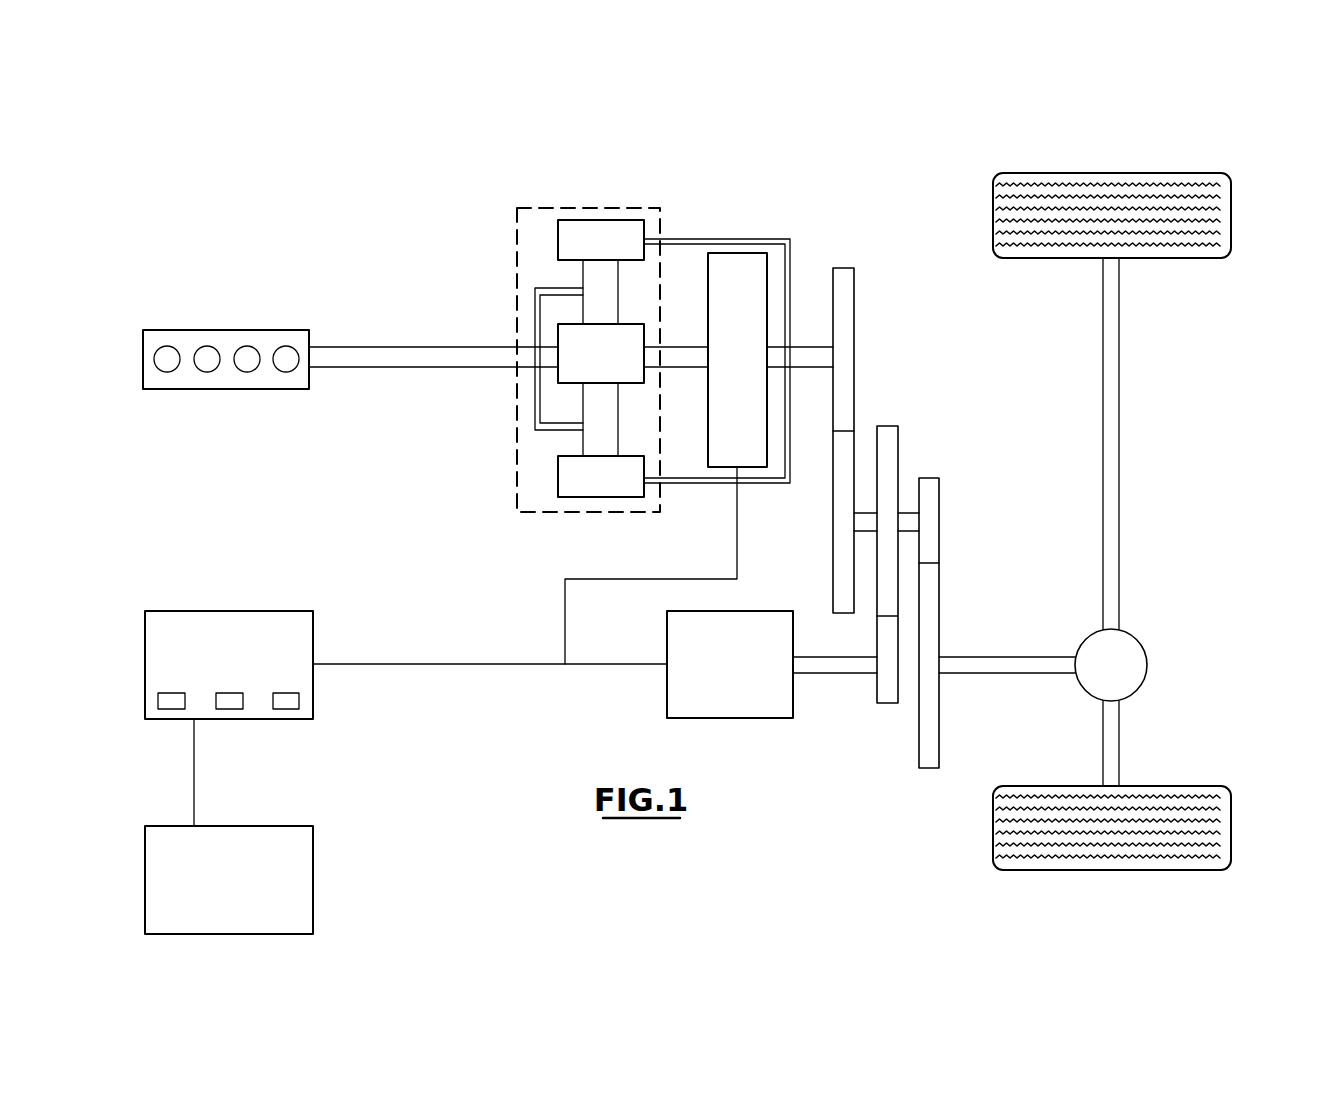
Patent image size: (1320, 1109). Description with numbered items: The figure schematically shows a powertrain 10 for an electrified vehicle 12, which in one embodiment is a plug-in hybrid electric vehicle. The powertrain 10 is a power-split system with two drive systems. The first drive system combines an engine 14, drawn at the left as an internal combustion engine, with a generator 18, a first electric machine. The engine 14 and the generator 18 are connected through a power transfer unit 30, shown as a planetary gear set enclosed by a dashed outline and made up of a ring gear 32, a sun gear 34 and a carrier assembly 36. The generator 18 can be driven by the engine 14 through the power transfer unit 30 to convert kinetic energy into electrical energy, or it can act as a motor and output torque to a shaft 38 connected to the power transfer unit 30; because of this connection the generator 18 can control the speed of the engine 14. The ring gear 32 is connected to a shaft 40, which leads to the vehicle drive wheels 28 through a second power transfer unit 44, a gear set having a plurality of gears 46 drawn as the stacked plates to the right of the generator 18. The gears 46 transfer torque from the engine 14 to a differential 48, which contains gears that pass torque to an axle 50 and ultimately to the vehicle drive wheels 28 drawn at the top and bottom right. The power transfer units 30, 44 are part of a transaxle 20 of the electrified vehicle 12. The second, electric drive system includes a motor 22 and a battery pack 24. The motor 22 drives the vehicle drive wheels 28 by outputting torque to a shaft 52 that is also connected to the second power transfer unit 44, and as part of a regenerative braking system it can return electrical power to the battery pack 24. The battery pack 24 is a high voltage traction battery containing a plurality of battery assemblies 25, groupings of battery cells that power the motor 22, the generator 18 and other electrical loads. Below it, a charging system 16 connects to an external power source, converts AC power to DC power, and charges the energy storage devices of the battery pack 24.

The powertrain 10 is at (370, 240).
The electrified vehicle 12 is at (755, 171).
The engine 14 is at (160, 330).
The charging system 16 is at (313, 871).
The generator 18 is at (718, 253).
The transaxle 20 is at (820, 272).
The motor 22 is at (793, 703).
The battery pack 24 is at (160, 611).
The battery assemblies 25 is at (185, 701).
The vehicle drive wheels 28 is at (1230, 828).
The power transfer unit 30 is at (517, 470).
The ring gear 32 is at (558, 240).
The sun gear 34 is at (558, 332).
The carrier assembly 36 is at (535, 413).
The shaft 38 is at (673, 347).
The shaft 40 is at (812, 347).
The second power transfer unit 44 is at (918, 395).
The gears 46 is at (854, 396).
The differential 48 is at (1142, 687).
The axle 50 is at (1119, 433).
The shaft 52 is at (845, 673).